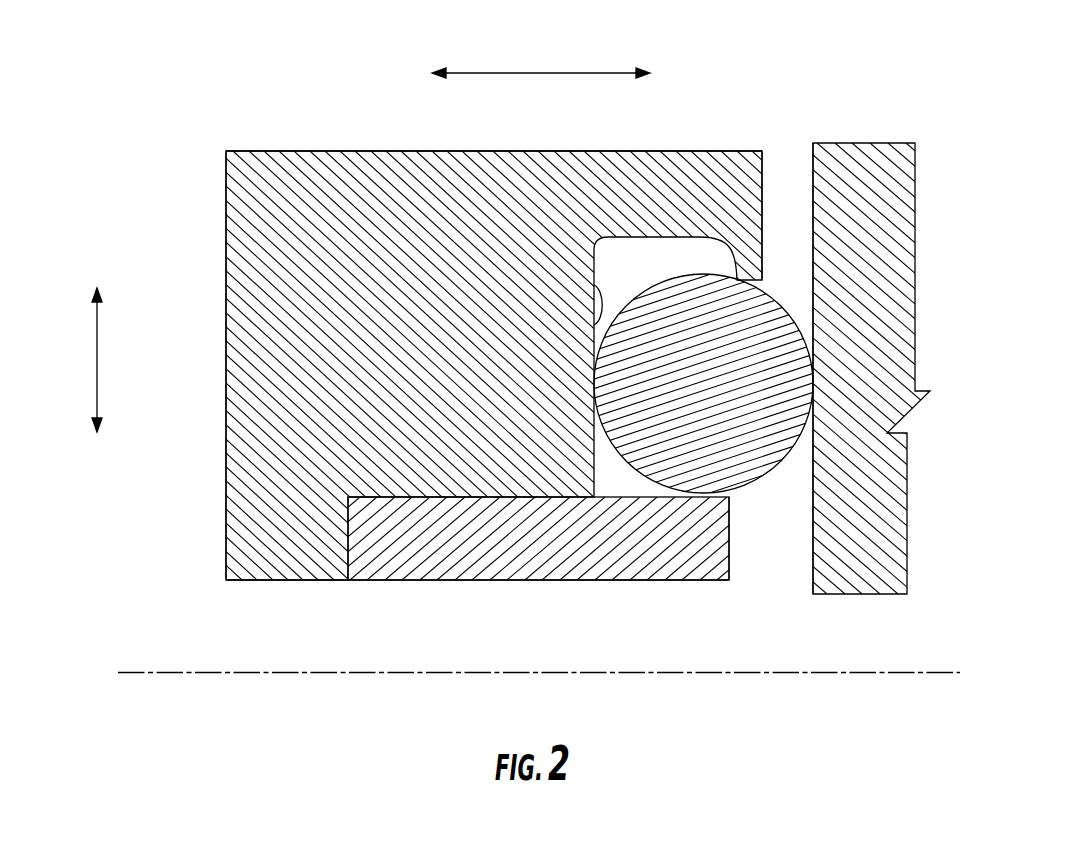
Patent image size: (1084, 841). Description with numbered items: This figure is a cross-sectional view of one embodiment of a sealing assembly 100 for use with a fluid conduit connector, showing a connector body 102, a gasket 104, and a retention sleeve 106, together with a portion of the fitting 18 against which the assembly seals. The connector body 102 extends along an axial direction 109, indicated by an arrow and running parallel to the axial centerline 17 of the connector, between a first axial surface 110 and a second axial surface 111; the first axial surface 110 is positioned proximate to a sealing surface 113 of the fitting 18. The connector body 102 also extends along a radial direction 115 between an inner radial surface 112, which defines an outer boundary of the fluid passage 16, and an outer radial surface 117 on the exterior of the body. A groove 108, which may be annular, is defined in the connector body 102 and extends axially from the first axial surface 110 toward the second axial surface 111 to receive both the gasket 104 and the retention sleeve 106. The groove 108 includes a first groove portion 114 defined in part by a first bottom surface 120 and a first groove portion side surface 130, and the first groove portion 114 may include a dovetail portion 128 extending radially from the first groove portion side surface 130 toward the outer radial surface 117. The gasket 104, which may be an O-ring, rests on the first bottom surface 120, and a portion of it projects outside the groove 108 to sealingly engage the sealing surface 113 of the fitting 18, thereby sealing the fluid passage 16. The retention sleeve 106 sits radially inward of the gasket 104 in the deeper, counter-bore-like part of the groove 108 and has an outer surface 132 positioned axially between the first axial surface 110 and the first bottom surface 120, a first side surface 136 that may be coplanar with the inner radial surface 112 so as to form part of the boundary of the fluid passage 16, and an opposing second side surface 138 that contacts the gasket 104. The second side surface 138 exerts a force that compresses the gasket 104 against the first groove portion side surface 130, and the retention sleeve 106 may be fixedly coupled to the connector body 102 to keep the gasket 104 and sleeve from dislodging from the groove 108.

The sealing assembly 100 is at (188, 175).
The connector body 102 is at (247, 370).
The gasket 104 is at (802, 287).
The retention sleeve 106 is at (510, 582).
The groove 108 is at (608, 472).
The axial direction 109 is at (533, 73).
The first axial surface 110 is at (762, 183).
The second axial surface 111 is at (229, 517).
The inner radial surface 112 is at (257, 580).
The sealing surface 113 is at (813, 578).
The first groove portion 114 is at (643, 272).
The radial direction 115 is at (97, 350).
The outer radial surface 117 is at (452, 151).
The first bottom surface 120 is at (594, 283).
The dovetail portion 128 is at (622, 277).
The first groove portion side surface 130 is at (757, 285).
The outer surface 132 is at (729, 548).
The first side surface 136 is at (400, 582).
The second side surface 138 is at (650, 495).
The fluid passage 16 is at (350, 661).
The axial centerline 17 is at (760, 673).
The fitting 18 is at (843, 143).